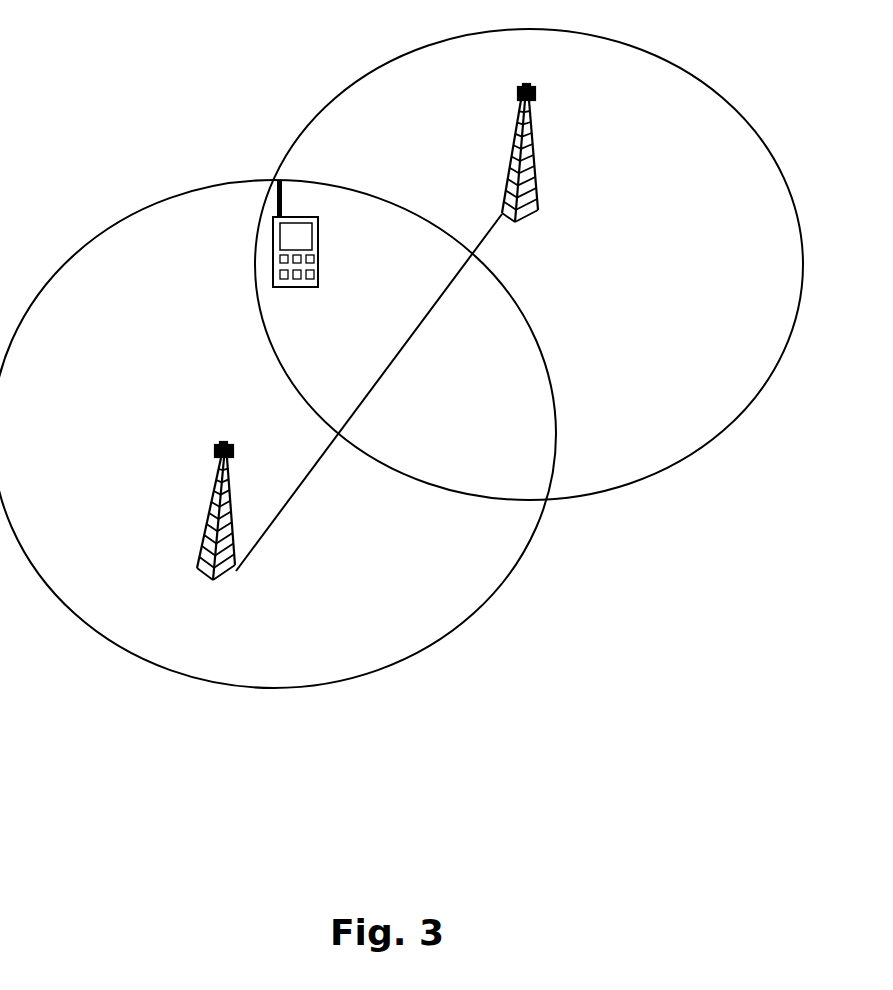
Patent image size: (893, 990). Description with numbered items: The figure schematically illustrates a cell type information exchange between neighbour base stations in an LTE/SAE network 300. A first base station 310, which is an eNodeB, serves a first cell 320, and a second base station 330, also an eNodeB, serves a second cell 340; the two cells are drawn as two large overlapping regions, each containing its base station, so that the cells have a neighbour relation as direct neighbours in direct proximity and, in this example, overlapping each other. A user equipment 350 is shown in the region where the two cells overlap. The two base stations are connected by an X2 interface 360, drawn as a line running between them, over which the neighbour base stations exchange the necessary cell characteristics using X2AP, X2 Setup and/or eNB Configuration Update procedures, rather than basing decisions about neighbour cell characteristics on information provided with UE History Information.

The LTE/SAE network 300 is at (149, 86).
The base station 310 is at (538, 215).
The cell 320 is at (529, 264).
The base station 330 is at (237, 573).
The cell 340 is at (278, 434).
The user equipment 350 is at (276, 180).
The X2 interface 360 is at (385, 367).